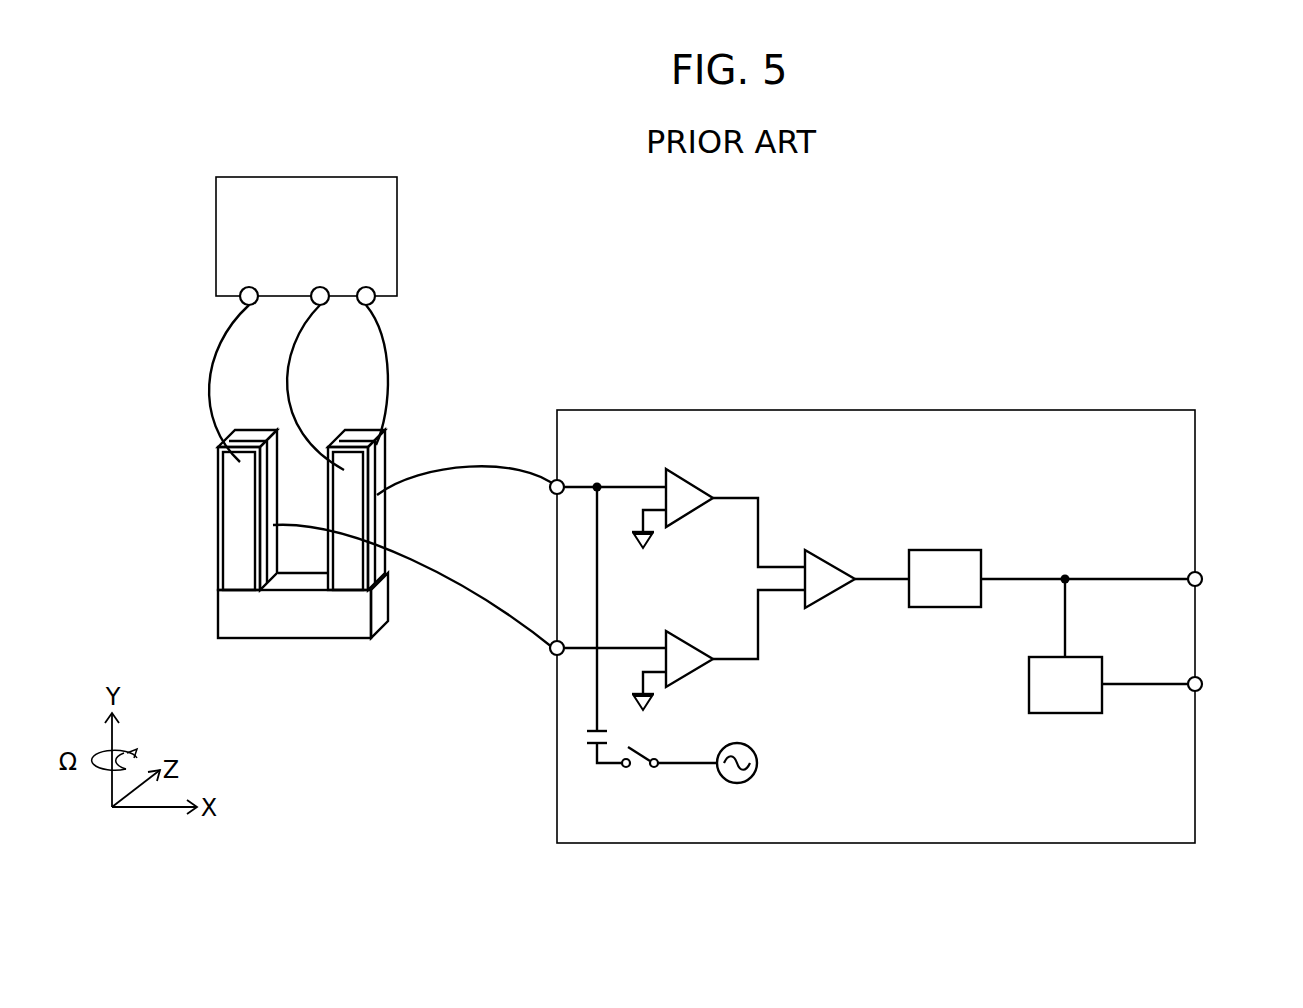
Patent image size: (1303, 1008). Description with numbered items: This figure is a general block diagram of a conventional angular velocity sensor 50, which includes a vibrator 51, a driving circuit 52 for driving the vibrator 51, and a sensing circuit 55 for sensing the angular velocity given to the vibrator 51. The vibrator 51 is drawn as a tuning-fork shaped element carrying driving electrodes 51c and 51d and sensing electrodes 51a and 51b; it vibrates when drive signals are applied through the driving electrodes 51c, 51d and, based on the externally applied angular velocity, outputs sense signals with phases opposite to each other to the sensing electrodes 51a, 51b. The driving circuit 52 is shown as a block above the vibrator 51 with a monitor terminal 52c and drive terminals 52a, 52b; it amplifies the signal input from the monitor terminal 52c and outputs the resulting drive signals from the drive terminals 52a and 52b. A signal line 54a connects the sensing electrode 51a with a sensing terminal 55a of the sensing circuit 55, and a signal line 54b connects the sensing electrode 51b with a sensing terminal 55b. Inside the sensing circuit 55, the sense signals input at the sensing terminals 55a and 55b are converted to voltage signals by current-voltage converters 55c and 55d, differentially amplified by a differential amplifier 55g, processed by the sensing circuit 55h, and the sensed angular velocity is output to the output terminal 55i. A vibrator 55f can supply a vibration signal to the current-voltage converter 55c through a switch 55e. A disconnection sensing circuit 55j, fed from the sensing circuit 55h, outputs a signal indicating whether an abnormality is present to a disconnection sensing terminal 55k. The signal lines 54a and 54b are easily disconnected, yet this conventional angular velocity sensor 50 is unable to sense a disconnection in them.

The angular velocity sensor 50 is at (703, 338).
The vibrator 51 is at (215, 499).
The sensing electrode 51a is at (375, 573).
The sensing electrode 51b is at (268, 573).
The driving electrode 51c is at (387, 527).
The driving electrode 51d is at (343, 582).
The driving circuit 52 is at (307, 176).
The drive terminal 52a is at (374, 301).
The drive terminal 52b is at (312, 299).
The monitor terminal 52c is at (240, 300).
The signal line 54a is at (470, 470).
The signal line 54b is at (472, 598).
The sensing circuit 55 is at (853, 410).
The sensing terminal 55a is at (565, 478).
The sensing terminal 55b is at (553, 657).
The current-voltage converter 55c is at (702, 490).
The current-voltage converter 55d is at (697, 668).
The switch 55e is at (640, 770).
The vibrator 55f is at (758, 770).
The differential amplifier 55g is at (828, 562).
The sensing circuit 55h is at (948, 548).
The output terminal 55i is at (1204, 575).
The disconnection sensing circuit 55j is at (1063, 715).
The disconnection sensing terminal 55k is at (1204, 680).